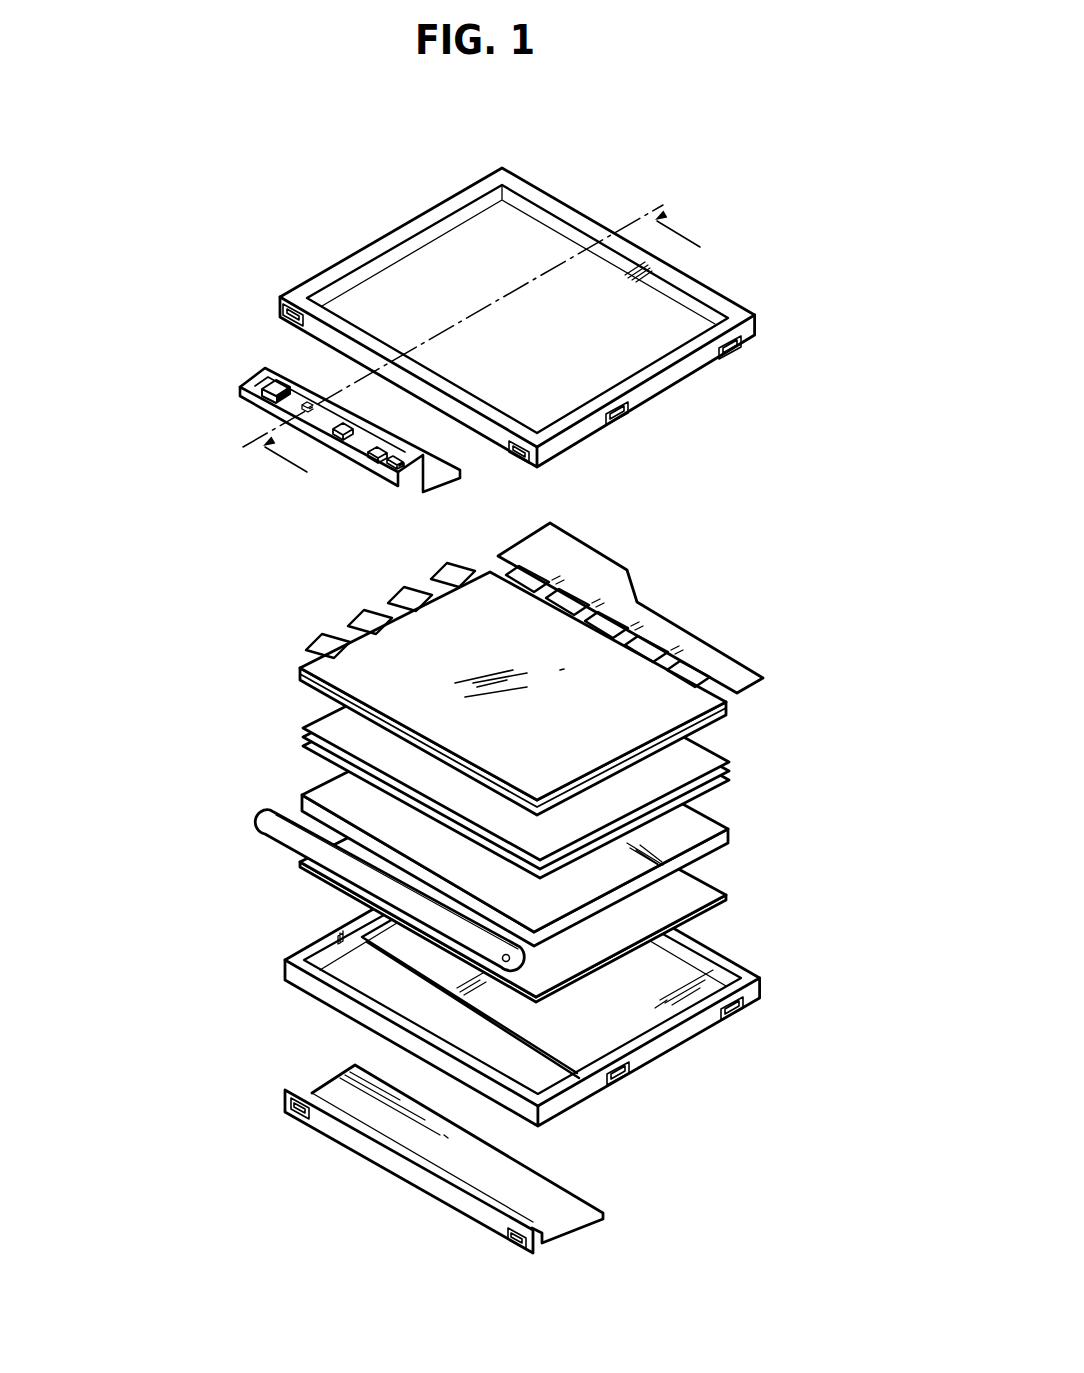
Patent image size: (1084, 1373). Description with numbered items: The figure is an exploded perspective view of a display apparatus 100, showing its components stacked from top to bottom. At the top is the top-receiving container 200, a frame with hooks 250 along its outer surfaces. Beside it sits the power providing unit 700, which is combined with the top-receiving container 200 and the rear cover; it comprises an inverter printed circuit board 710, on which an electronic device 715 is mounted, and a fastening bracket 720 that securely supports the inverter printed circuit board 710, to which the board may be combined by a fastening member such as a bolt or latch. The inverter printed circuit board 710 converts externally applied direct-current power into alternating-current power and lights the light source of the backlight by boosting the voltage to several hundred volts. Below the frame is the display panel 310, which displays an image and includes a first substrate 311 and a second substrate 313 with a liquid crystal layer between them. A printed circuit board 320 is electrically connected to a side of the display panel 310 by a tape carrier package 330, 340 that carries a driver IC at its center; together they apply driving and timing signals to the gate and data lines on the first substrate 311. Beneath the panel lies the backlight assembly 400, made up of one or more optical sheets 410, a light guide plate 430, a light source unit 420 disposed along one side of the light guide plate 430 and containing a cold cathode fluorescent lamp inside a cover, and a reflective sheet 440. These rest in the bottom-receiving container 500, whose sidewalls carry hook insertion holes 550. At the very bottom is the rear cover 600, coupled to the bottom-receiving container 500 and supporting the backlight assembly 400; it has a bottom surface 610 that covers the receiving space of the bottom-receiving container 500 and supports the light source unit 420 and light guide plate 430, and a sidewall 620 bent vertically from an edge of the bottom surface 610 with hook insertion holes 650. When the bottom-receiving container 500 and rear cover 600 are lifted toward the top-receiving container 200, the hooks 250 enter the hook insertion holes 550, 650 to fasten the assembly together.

The display apparatus 100 is at (687, 110).
The top-receiving container 200 is at (733, 316).
The hooks 250 is at (618, 417).
The power providing unit 700 is at (241, 297).
The inverter printed circuit board 710 is at (262, 376).
The fastening bracket 720 is at (293, 373).
The electronic device 715 is at (263, 402).
The display panel 310 is at (186, 653).
The first substrate 311 is at (303, 667).
The second substrate 313 is at (335, 685).
The tape carrier package 330 is at (450, 572).
The tape carrier package 340 is at (690, 665).
The printed circuit board 320 is at (740, 673).
The backlight assembly 400 is at (152, 735).
The optical sheets 410 is at (295, 725).
The light guide plate 430 is at (320, 795).
The light source unit 420 is at (270, 824).
The reflective sheet 440 is at (303, 861).
The bottom-receiving container 500 is at (760, 985).
The hook insertion holes 550 is at (625, 1073).
The rear cover 600 is at (352, 1210).
The bottom surface 610 is at (517, 1202).
The sidewall 620 is at (473, 1212).
The hook insertion holes 650 is at (293, 1113).